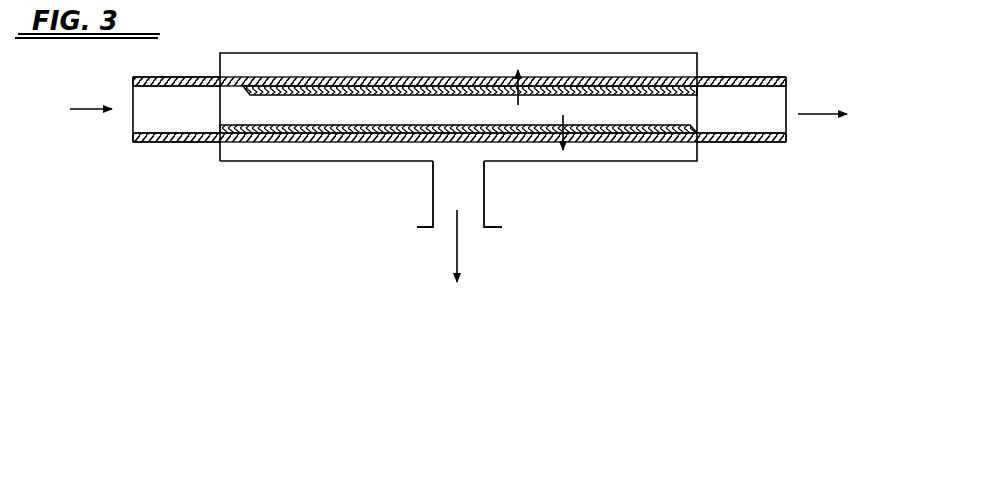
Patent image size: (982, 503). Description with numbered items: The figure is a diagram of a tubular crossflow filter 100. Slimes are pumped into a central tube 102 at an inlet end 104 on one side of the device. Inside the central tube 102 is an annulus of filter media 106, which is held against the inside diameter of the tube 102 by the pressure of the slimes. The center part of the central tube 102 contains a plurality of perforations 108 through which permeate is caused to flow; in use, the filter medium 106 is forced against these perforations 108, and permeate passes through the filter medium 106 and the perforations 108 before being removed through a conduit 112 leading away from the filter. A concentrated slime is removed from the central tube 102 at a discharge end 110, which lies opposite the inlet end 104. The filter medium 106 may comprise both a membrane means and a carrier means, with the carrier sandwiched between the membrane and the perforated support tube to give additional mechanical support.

The tubular crossflow filter 100 is at (395, 349).
The central tube 102 is at (505, 145).
The inlet end 104 is at (175, 143).
The filter media 106 is at (232, 130).
The perforations 108 is at (378, 133).
The discharge end 110 is at (765, 143).
The conduit 112 is at (487, 198).